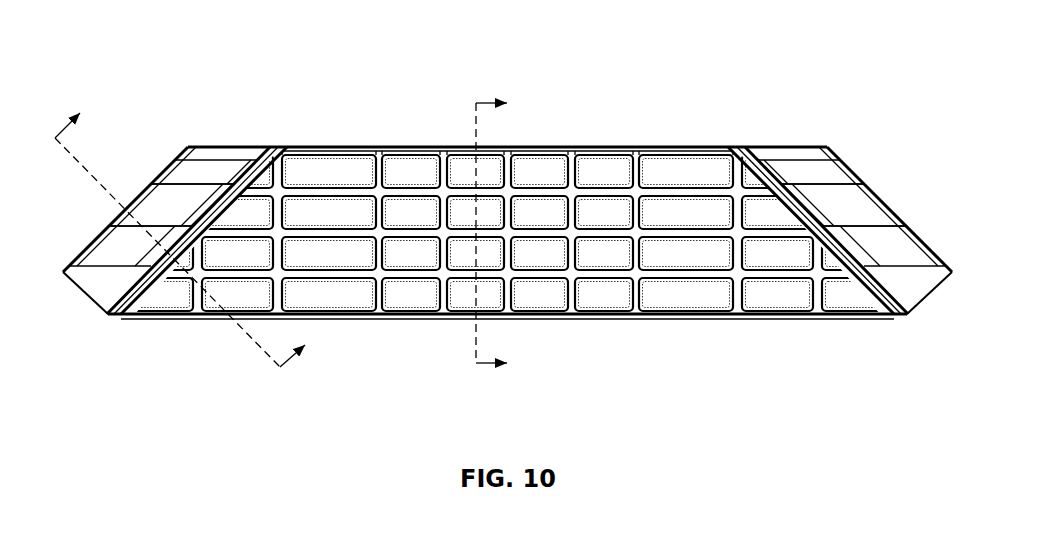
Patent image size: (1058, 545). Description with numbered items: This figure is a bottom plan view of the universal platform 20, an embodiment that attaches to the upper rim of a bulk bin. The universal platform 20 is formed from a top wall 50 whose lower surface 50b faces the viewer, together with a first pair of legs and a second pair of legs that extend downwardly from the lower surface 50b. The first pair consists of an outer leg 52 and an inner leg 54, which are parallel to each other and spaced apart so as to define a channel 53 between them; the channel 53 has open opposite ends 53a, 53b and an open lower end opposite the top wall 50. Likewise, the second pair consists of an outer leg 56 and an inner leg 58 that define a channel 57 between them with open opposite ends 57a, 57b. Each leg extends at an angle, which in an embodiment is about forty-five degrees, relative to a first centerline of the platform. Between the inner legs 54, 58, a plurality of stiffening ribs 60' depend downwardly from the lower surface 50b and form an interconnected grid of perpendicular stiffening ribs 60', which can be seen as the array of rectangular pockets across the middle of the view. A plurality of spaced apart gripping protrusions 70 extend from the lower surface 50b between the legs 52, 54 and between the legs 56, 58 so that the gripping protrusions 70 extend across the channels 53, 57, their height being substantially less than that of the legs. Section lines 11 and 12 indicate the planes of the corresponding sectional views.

The universal platform 20 is at (665, 70).
The top wall 50 is at (675, 266).
The lower surface 50b is at (547, 212).
The outer leg 52 is at (176, 184).
The channel 53 is at (108, 250).
The open end 53a is at (243, 146).
The open end 53b is at (87, 300).
The inner leg 54 is at (278, 153).
The outer leg 56 is at (836, 170).
The channel 57 is at (863, 208).
The open end 57a is at (790, 146).
The open end 57b is at (932, 302).
The inner leg 58 is at (762, 172).
The stiffening ribs 60' is at (498, 233).
The gripping protrusions 70 is at (182, 192).
The section line 11- 11 is at (511, 234).
The section line 12- 12 is at (196, 224).